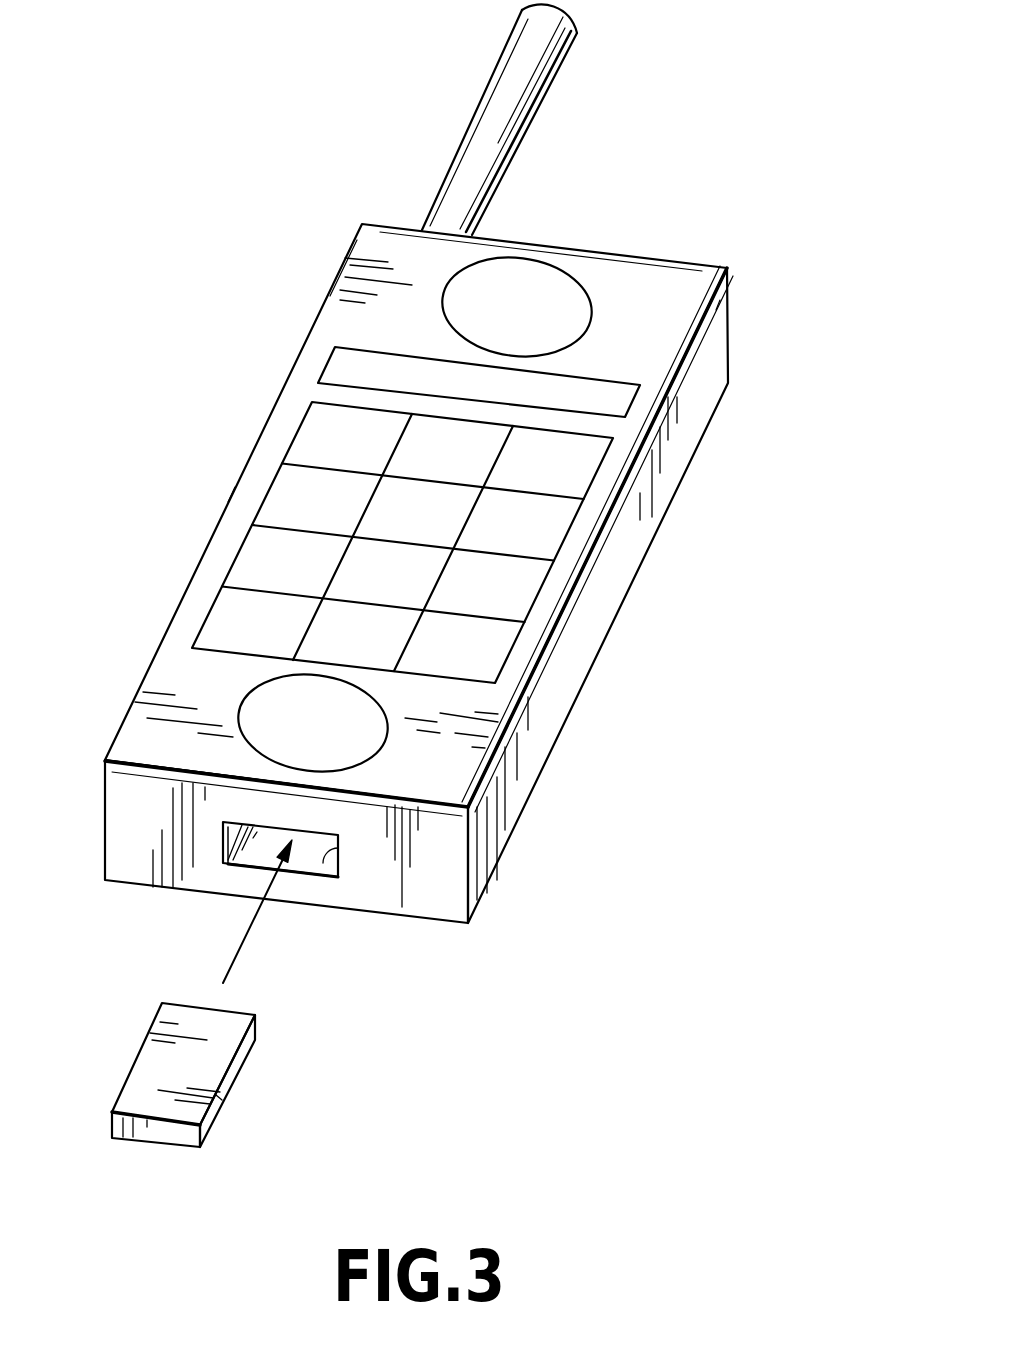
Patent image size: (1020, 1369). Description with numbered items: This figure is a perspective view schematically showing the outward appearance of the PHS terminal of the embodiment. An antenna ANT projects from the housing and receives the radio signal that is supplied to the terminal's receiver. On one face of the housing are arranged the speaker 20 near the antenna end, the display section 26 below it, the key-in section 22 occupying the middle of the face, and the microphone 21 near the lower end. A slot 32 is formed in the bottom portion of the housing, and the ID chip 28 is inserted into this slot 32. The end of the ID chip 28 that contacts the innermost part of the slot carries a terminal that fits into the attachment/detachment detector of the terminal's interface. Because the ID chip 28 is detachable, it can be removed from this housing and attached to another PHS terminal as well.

The antenna ANT is at (552, 85).
The speaker 20 is at (590, 297).
The display section 26 is at (637, 397).
The key-in section 22 is at (543, 528).
The microphone 21 is at (365, 730).
The slot 32 is at (323, 863).
The ID chip 28 is at (248, 1058).